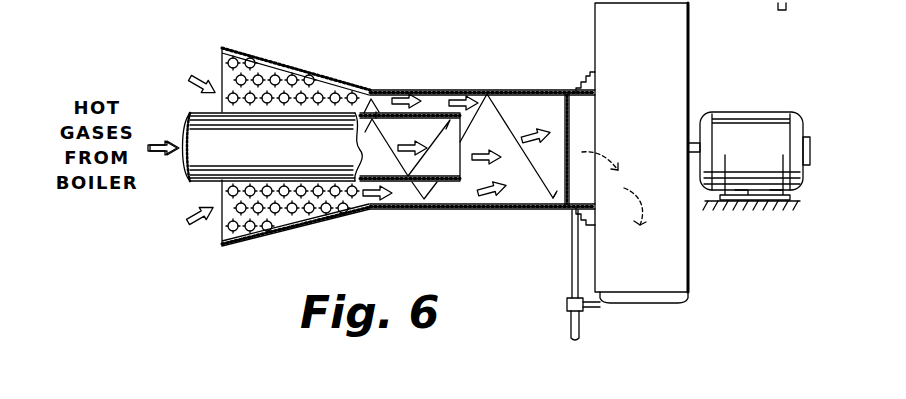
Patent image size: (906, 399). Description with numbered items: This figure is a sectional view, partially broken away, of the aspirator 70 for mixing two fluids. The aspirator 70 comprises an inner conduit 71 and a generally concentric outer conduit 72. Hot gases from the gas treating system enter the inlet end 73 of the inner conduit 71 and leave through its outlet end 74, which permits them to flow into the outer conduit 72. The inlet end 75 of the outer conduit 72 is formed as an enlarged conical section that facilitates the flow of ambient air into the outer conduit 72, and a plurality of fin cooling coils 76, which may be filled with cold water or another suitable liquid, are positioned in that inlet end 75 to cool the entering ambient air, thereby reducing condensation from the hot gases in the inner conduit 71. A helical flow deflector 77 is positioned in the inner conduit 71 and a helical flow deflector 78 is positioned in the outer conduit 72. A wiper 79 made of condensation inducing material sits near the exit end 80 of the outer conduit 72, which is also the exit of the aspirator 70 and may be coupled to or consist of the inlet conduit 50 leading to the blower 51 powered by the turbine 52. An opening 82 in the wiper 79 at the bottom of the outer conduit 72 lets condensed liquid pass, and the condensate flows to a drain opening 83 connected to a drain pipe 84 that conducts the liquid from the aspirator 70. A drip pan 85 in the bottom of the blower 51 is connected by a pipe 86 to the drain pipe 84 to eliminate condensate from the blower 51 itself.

The inlet conduit 50 is at (574, 84).
The blower 51 is at (594, 11).
The turbine 52 is at (762, 111).
The aspirator 70 is at (339, 68).
The inner conduit 71 is at (388, 112).
The outer conduit 72 is at (428, 90).
The inlet end 73 is at (204, 113).
The outlet end 74 is at (458, 184).
The inlet end 75 is at (258, 60).
The fin cooling coils 76 is at (281, 77).
The helical flow deflector 77 is at (441, 116).
The helical flow deflector 78 is at (488, 95).
The wiper 79 is at (558, 185).
The exit end 80 is at (565, 92).
The opening 82 is at (763, 11).
The drain opening 83 is at (573, 207).
The drain pipe 84 is at (570, 282).
The drip pan 85 is at (680, 301).
The pipe 86 is at (586, 304).